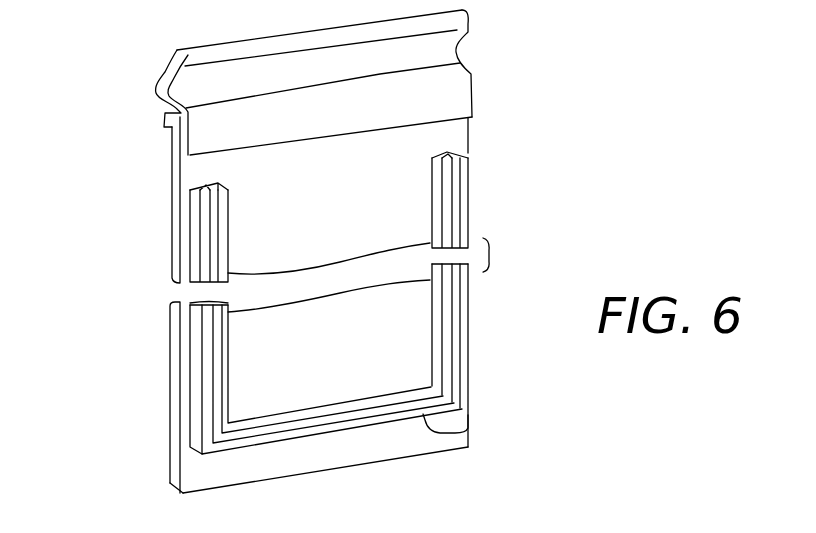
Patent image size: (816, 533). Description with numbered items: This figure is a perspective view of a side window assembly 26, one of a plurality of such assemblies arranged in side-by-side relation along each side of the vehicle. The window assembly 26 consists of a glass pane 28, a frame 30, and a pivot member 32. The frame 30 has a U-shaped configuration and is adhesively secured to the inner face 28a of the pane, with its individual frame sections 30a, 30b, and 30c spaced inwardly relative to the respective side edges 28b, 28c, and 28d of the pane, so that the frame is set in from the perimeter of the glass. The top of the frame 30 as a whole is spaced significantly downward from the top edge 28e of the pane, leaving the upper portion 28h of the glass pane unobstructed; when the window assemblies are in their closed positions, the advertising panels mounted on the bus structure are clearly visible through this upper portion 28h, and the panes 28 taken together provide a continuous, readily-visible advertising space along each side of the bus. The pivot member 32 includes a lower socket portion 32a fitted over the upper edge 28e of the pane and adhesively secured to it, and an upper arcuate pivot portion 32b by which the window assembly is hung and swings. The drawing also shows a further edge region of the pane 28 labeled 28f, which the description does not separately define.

The window assembly 26 is at (327, 264).
The glass pane 28 is at (321, 386).
The inner face of the pane 28a is at (360, 332).
The side edge of the pane 28b is at (167, 315).
The side edge of the pane 28c is at (349, 475).
The side edge of the pane 28d is at (467, 283).
The top edge of the pane 28e is at (153, 85).
The end flange of frame member 28f is at (472, 129).
The upper portion of the glass pane 28h is at (253, 200).
The frame 30 is at (334, 378).
The frame section 30a is at (190, 213).
The frame section 30b is at (458, 430).
The frame section 30c is at (453, 358).
The pivot member 32 is at (314, 78).
The lower socket portion 32a is at (469, 60).
The upper arcuate pivot portion 32b is at (200, 43).